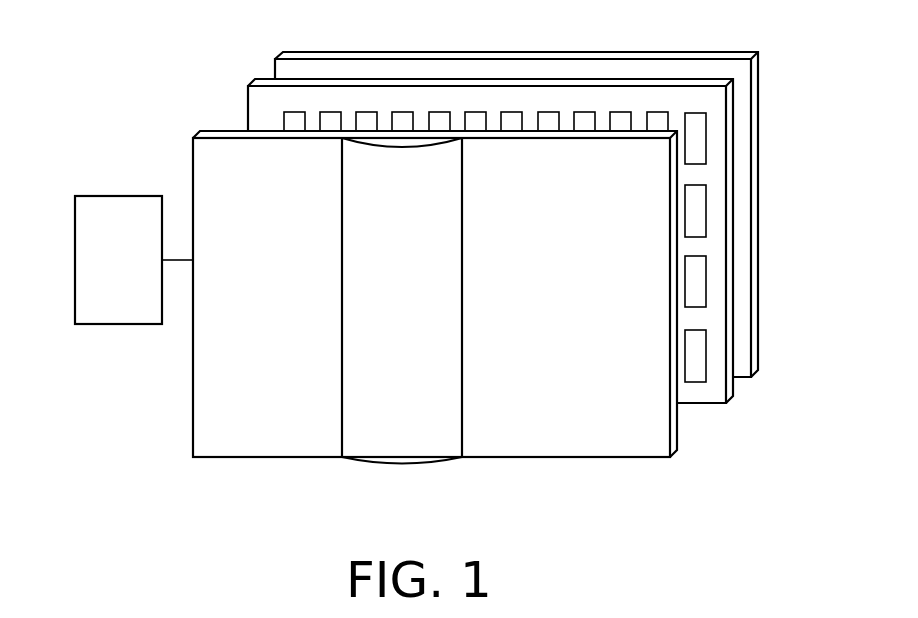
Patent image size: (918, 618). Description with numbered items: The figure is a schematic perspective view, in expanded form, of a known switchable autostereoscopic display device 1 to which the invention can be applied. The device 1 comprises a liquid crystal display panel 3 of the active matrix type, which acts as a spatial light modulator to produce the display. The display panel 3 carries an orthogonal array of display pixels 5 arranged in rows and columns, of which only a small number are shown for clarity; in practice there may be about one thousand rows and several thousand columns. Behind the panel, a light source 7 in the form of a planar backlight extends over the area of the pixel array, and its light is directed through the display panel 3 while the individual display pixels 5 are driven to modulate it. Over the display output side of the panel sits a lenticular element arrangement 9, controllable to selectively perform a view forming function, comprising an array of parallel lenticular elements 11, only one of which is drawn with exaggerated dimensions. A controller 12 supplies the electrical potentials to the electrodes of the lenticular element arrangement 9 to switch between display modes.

The autostereoscopic display device 1 is at (142, 90).
The liquid crystal display panel 3 is at (733, 397).
The display pixels 5 is at (696, 144).
The light source 7 is at (757, 372).
The lenticular element arrangement 9 is at (677, 451).
The lenticular elements 11 is at (404, 444).
The controller 12 is at (131, 276).